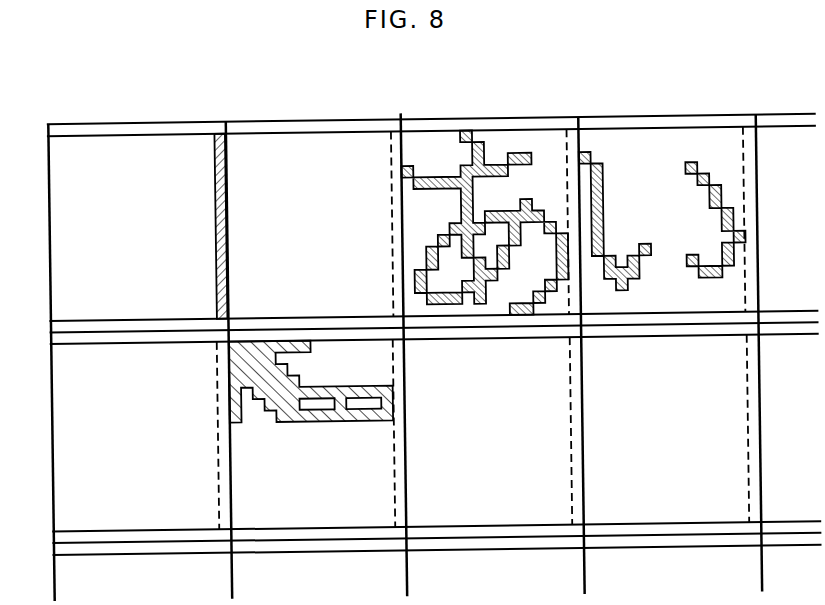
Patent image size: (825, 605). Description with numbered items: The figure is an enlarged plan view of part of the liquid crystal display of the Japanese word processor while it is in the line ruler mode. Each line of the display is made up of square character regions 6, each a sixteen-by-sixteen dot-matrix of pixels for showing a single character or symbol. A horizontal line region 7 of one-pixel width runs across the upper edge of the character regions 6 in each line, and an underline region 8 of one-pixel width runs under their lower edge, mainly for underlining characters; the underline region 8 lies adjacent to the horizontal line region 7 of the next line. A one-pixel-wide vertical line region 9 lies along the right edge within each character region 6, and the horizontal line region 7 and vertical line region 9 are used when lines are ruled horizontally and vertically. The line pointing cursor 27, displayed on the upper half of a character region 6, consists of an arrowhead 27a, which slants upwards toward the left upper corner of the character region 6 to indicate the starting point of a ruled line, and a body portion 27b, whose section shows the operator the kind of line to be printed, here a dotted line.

The character region 6 is at (134, 143).
The horizontal line region 7 is at (182, 120).
The underline region 8 is at (174, 318).
The vertical line region 9 is at (218, 234).
The line pointing cursor 27 is at (289, 420).
The arrowhead 27a is at (254, 393).
The body portion 27b is at (322, 420).